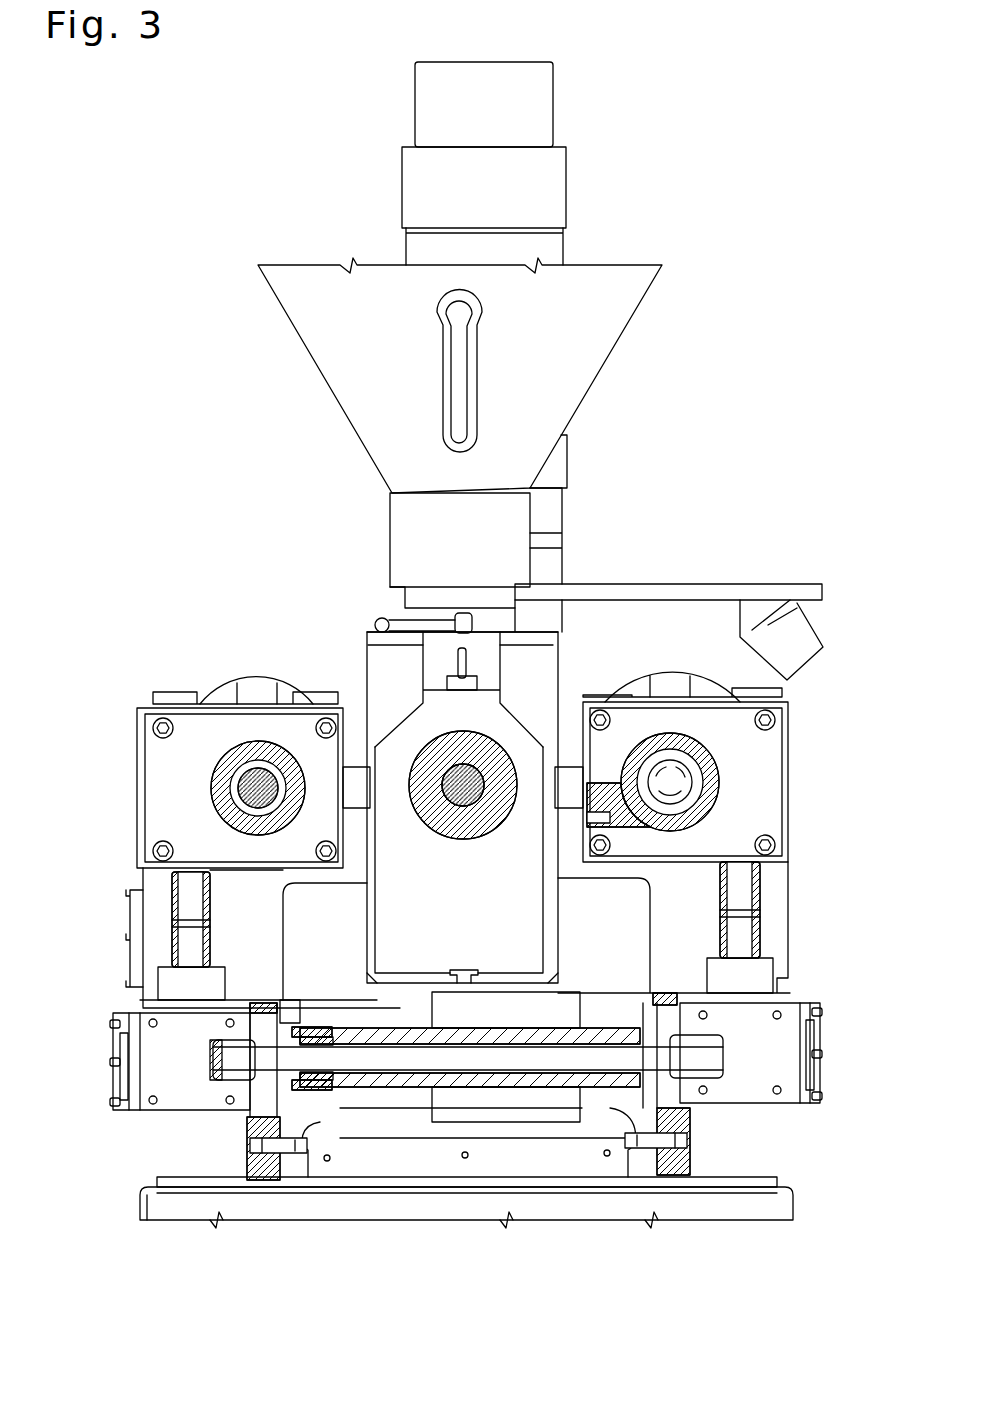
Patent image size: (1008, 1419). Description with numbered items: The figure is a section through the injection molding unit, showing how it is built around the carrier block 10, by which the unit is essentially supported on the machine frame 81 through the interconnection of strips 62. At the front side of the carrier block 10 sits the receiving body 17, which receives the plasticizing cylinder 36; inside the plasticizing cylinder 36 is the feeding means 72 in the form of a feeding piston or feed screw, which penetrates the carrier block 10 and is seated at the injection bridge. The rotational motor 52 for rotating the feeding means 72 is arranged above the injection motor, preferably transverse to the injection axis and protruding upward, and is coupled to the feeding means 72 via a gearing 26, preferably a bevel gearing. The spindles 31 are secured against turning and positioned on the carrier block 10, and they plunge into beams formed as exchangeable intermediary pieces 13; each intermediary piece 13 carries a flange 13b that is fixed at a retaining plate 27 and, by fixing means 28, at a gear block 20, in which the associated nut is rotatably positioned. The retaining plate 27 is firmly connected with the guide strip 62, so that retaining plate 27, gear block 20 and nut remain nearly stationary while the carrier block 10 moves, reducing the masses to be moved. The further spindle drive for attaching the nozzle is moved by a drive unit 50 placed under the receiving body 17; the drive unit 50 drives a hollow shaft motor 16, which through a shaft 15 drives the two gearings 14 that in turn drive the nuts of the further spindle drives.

The rotational motor 52 is at (489, 108).
The gearing 26 is at (550, 565).
The carrier block 10 is at (352, 705).
The flange 13b is at (197, 733).
The spindle 31 is at (258, 788).
The intermediary piece 13 is at (217, 787).
The fixing means 28 is at (773, 722).
The gear block 20 is at (190, 897).
The retaining plate 27 is at (248, 927).
The hollow shaft motor 16 is at (303, 1000).
The plasticizing cylinder 36 is at (467, 840).
The feeding means 72 is at (457, 803).
The receiving body 17 is at (515, 960).
The gearing 14 is at (187, 1077).
The strip 62 is at (690, 1125).
The machine frame 81 is at (767, 1182).
The shaft 15 is at (543, 1060).
The drive unit 50 is at (490, 1103).